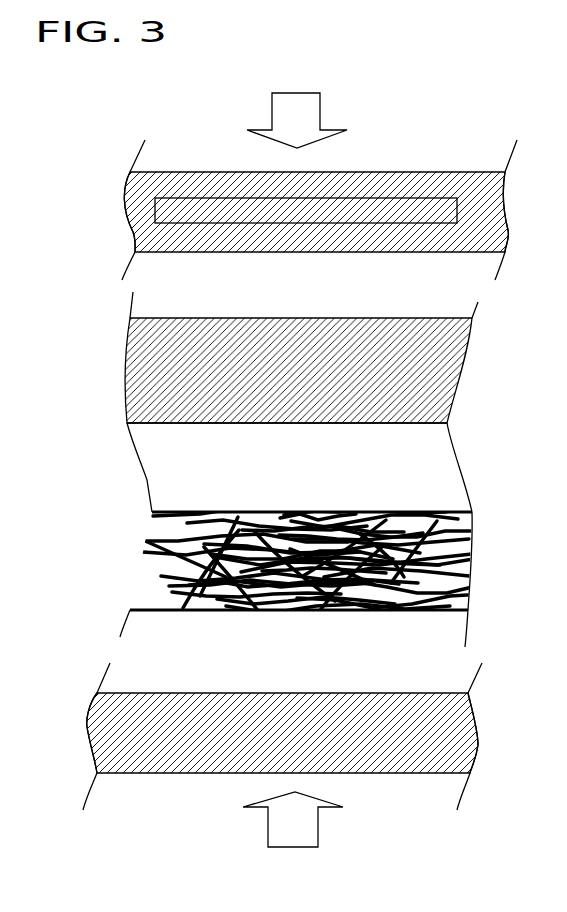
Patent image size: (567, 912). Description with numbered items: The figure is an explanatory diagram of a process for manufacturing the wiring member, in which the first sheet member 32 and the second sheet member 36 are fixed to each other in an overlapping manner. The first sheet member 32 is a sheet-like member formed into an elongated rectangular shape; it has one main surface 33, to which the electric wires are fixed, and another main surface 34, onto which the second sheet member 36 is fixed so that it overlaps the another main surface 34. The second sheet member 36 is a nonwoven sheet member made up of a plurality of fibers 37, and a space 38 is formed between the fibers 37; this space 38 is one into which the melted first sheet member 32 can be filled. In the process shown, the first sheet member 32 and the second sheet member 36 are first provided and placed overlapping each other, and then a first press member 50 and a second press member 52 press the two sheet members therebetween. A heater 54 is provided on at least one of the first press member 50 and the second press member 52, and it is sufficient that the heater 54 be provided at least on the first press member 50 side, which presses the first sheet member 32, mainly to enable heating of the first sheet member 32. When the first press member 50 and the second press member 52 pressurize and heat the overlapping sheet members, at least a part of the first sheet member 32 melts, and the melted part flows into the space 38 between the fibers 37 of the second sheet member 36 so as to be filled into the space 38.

The first press member 50 is at (415, 198).
The heater 54 is at (306, 210).
The one main surface 33 is at (412, 318).
The another main surface 34 is at (385, 423).
The first sheet member 32 is at (428, 423).
The second sheet member 36 is at (367, 612).
The space 38 is at (342, 508).
The fibers 37 is at (473, 585).
The second press member 52 is at (413, 773).